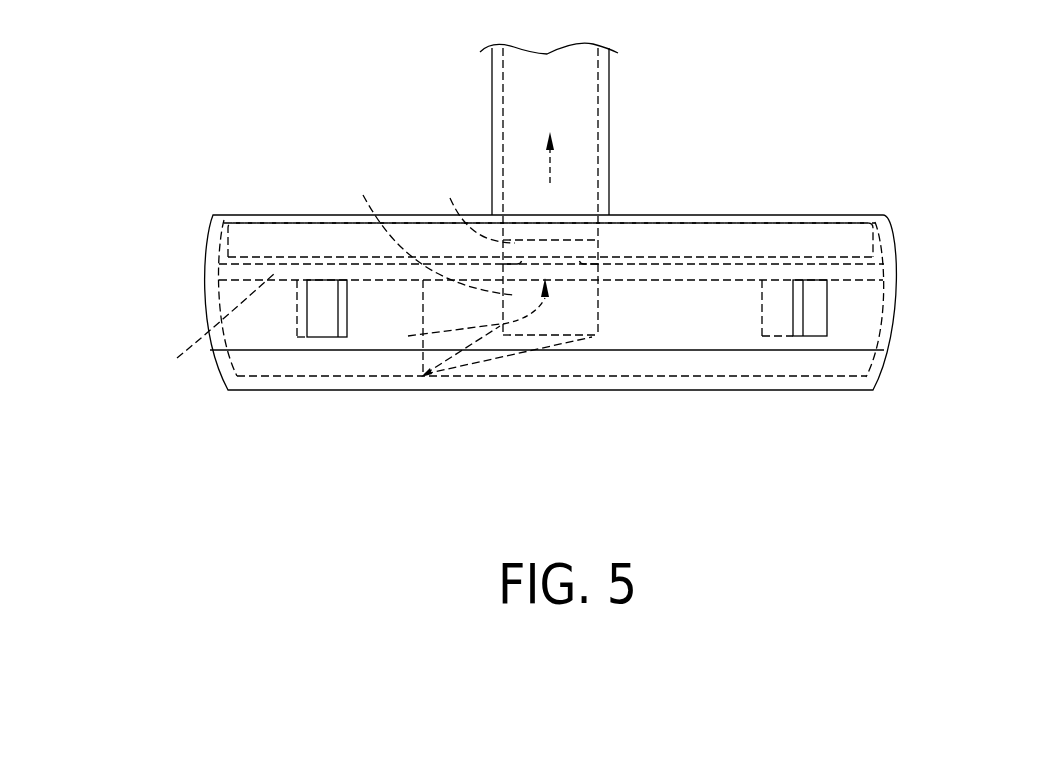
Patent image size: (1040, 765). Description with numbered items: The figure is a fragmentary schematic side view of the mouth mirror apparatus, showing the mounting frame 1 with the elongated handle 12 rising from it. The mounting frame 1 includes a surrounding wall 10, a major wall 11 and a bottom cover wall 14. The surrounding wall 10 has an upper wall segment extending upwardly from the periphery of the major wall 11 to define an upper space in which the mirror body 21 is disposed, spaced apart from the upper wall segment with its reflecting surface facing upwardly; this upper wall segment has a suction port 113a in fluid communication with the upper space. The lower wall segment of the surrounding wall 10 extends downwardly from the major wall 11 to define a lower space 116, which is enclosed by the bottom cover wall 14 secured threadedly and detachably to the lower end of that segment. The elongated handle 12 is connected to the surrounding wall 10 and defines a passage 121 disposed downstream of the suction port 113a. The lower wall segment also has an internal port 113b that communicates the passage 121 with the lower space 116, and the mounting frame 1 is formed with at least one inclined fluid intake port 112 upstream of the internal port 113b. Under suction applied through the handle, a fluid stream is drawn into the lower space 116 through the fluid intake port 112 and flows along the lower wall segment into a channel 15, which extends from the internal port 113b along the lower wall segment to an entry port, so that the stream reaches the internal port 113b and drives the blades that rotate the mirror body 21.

The mounting frame 1 is at (980, 143).
The surrounding wall 10 is at (891, 268).
The major wall 11 is at (247, 325).
The elongated handle 12 is at (609, 112).
The passage 121 is at (580, 145).
The bottom cover wall 14 is at (715, 390).
The channel 15 is at (448, 340).
The mirror body 21 is at (778, 242).
The fluid intake port 112 is at (323, 325).
The suction port 113a is at (467, 205).
The internal port 113b is at (421, 231).
The lower space 116 is at (211, 331).